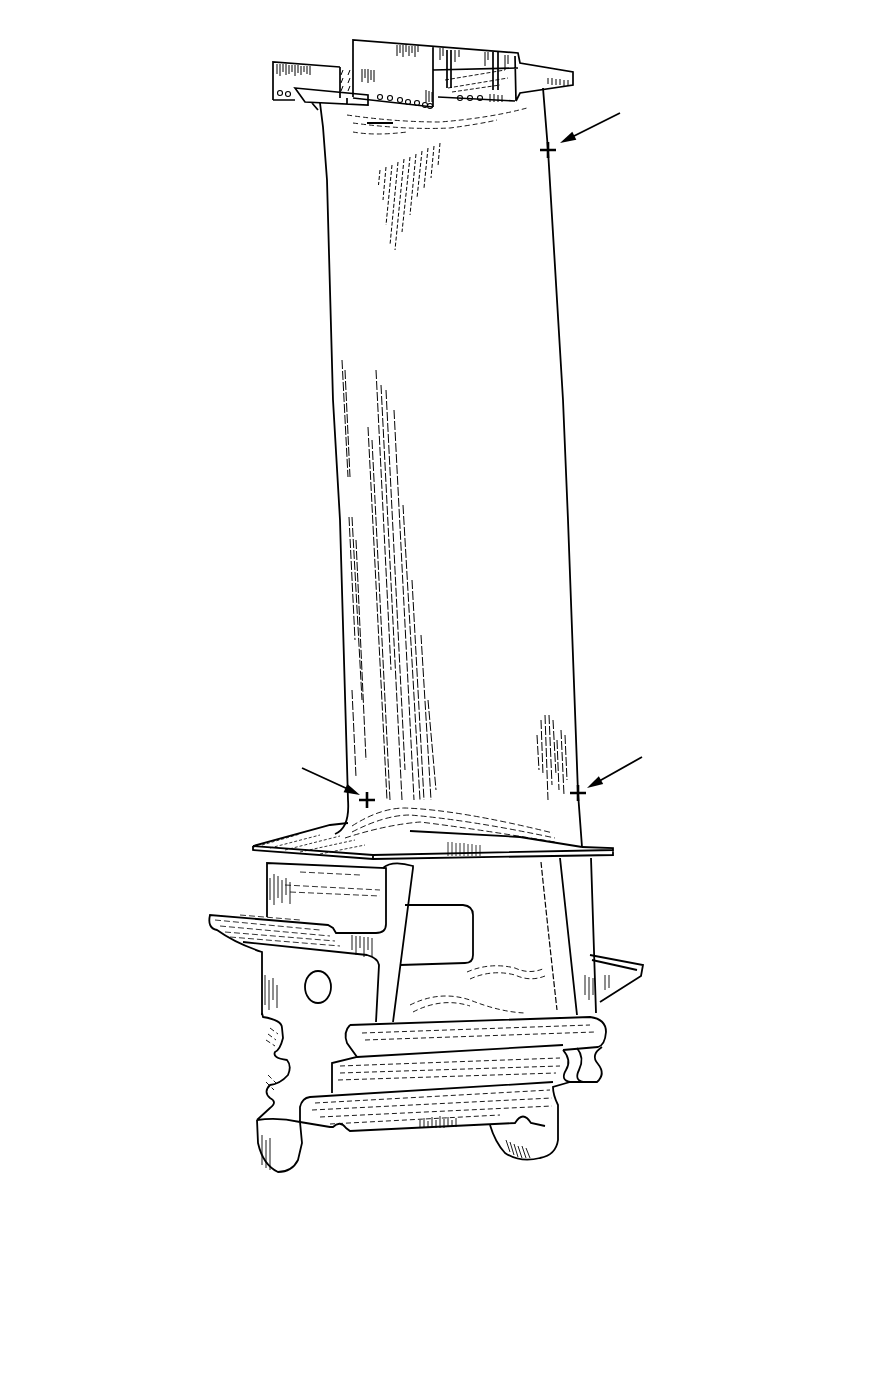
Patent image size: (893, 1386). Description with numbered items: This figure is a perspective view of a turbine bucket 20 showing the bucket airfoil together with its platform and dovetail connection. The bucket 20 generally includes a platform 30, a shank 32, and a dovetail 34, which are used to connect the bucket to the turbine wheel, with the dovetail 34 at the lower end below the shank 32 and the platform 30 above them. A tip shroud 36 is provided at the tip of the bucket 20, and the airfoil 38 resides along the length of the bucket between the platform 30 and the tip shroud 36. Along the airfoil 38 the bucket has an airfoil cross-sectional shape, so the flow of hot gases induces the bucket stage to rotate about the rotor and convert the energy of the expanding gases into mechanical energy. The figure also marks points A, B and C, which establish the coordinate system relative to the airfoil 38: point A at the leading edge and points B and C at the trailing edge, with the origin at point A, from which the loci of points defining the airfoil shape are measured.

The bucket 20 is at (130, 203).
The platform 30 is at (323, 840).
The shank 32 is at (294, 965).
The dovetail 34 is at (280, 1133).
The tip shroud 36 is at (313, 79).
The airfoil 38 is at (217, 843).